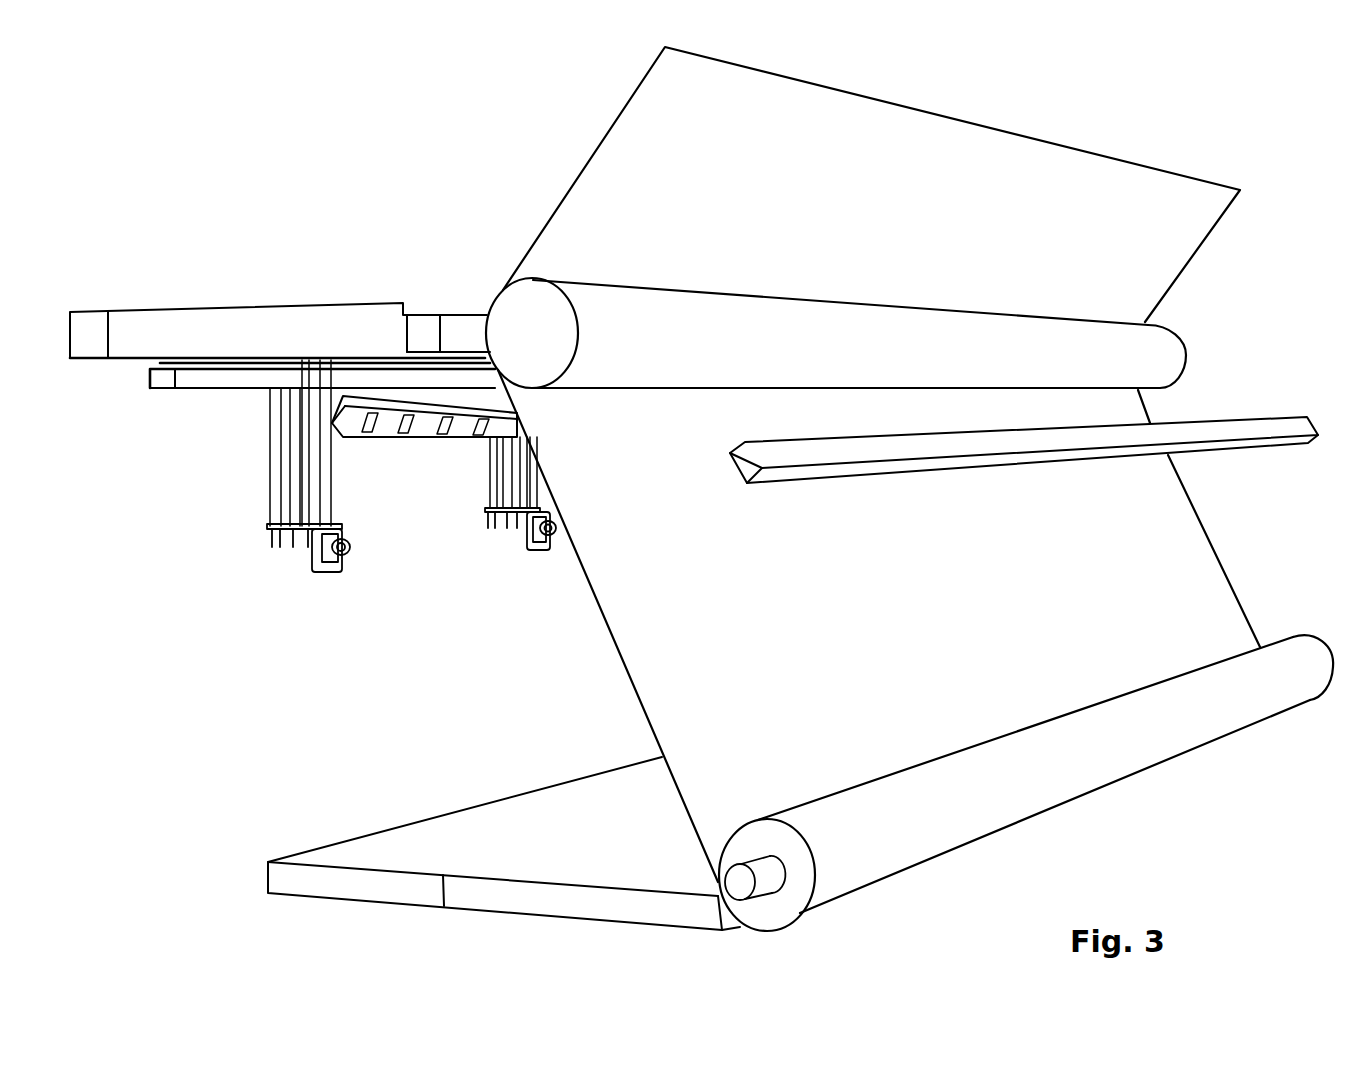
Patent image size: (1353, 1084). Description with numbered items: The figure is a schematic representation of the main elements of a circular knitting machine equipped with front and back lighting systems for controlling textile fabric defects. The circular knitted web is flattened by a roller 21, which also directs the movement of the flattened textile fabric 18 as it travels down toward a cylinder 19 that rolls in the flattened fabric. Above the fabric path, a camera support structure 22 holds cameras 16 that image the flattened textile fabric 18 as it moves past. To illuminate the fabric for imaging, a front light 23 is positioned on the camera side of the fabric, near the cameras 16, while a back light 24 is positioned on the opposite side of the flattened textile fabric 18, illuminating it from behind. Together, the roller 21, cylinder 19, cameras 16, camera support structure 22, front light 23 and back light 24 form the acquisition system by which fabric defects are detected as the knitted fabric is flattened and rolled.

The cameras 16 is at (518, 557).
The flattened textile fabric 18 is at (834, 650).
The cylinder 19 is at (1223, 752).
The roller 21 is at (768, 358).
The camera support structure 22 is at (262, 435).
The front light 23 is at (393, 450).
The back light 24 is at (968, 478).